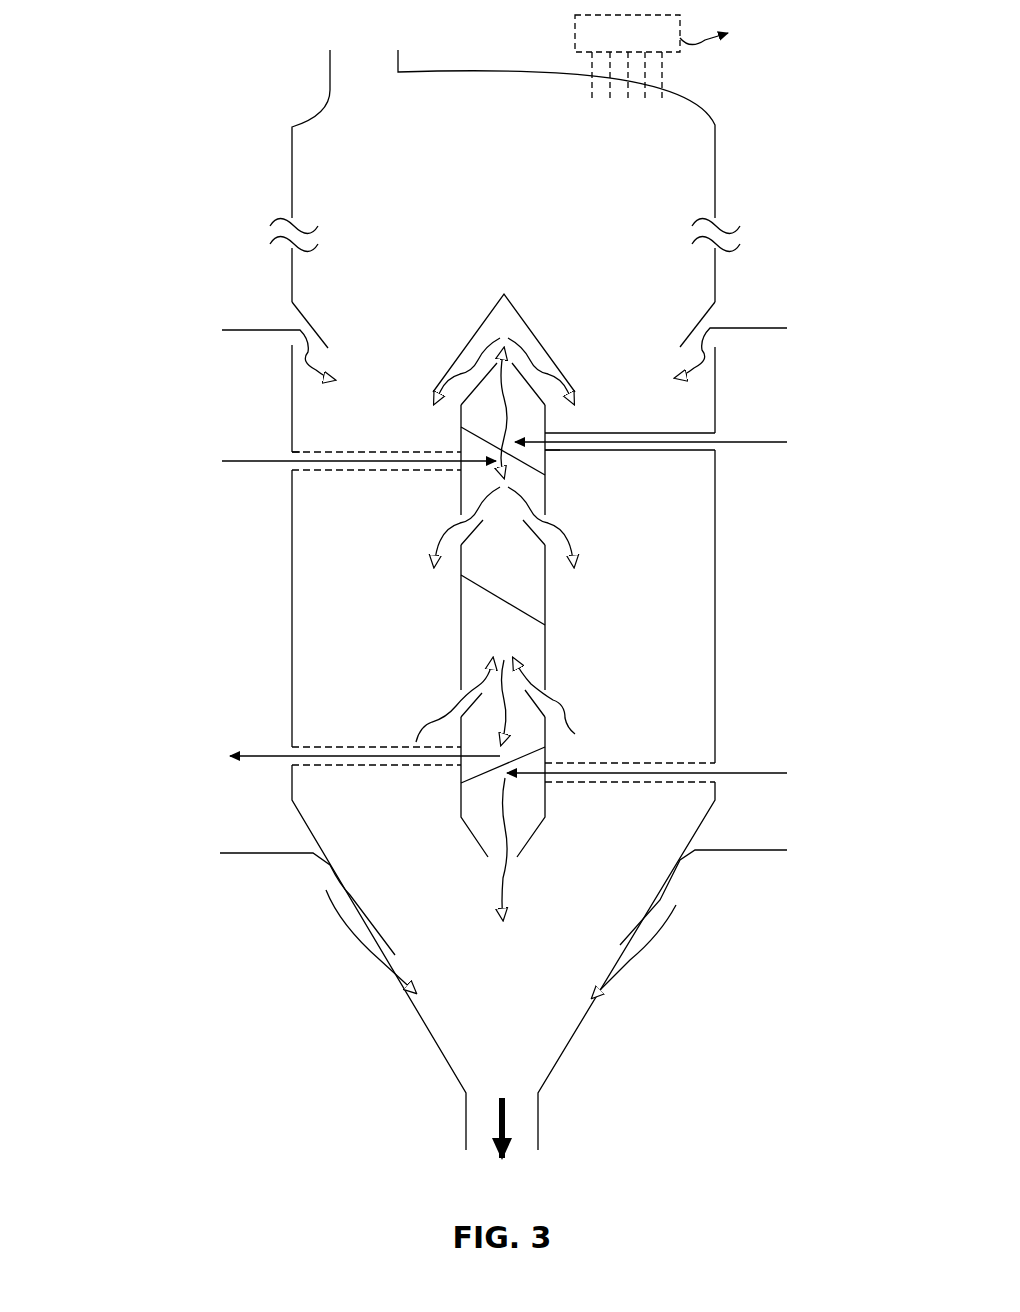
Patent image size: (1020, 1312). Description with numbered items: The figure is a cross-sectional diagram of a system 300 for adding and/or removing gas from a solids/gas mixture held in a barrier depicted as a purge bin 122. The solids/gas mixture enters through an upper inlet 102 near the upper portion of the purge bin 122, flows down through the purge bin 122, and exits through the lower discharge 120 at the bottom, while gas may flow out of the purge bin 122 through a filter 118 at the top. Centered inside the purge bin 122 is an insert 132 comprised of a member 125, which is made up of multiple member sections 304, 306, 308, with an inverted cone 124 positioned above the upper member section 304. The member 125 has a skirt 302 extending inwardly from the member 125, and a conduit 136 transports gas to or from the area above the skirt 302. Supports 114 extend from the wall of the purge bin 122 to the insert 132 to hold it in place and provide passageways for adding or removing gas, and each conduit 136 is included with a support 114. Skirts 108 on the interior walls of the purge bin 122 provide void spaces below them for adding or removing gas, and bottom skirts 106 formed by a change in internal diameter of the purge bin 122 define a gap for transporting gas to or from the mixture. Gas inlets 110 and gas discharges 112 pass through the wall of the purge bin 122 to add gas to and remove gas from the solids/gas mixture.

The upper inlet 102 is at (372, 66).
The filter 118 is at (575, 45).
The system 300 is at (260, 148).
The skirts 108 is at (283, 311).
The inverted cone 124 is at (482, 325).
The insert 132 is at (542, 310).
The gas inlets 110 is at (281, 449).
The supports 114 is at (405, 450).
The upper member section 304 is at (548, 470).
The conduit 136 is at (656, 452).
The purge bin 122 is at (292, 587).
The member 125 is at (416, 625).
The skirt 302 is at (472, 535).
The member section 306 is at (548, 625).
The gas discharges 112 is at (281, 745).
The member section 308 is at (462, 832).
The bottom skirts 106 is at (318, 889).
The lower discharge 120 is at (502, 1113).